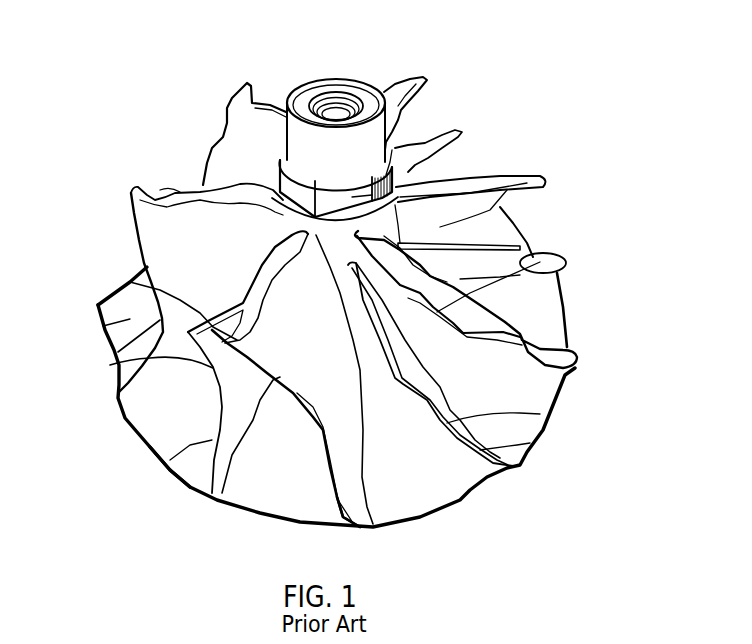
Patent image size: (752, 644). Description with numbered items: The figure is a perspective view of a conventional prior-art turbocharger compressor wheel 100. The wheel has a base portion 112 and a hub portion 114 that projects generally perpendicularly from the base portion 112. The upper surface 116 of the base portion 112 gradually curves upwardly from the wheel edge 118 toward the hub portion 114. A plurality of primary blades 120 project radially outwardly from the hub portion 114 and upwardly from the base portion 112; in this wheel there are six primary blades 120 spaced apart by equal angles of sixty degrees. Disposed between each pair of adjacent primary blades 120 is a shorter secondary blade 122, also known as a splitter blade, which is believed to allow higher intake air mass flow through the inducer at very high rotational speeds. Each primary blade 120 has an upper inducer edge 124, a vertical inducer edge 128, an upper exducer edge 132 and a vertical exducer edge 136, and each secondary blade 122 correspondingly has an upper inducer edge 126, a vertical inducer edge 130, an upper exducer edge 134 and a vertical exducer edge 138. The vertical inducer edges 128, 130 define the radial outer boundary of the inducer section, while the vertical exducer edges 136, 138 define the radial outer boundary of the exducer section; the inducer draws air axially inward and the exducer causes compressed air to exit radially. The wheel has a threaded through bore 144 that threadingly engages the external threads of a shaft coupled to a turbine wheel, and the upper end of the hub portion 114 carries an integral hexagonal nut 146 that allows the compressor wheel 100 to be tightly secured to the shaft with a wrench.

The compressor wheel 100 is at (550, 106).
The base portion 112 is at (427, 493).
The hub portion 114 is at (295, 140).
The upper surface 116 is at (466, 392).
The wheel edge 118 is at (175, 480).
The primary blades 120 is at (233, 101).
The secondary blade 122 is at (447, 127).
The upper inducer edge 124 is at (163, 197).
The upper inducer edge 126 is at (130, 282).
The vertical inducer edge 128 is at (130, 212).
The vertical inducer edge 130 is at (110, 365).
The upper exducer edge 132 is at (331, 482).
The upper exducer edge 134 is at (170, 460).
The vertical exducer edge 136 is at (103, 327).
The vertical exducer edge 138 is at (122, 421).
The threaded through bore 144 is at (337, 107).
The hexagonal nut 146 is at (400, 187).